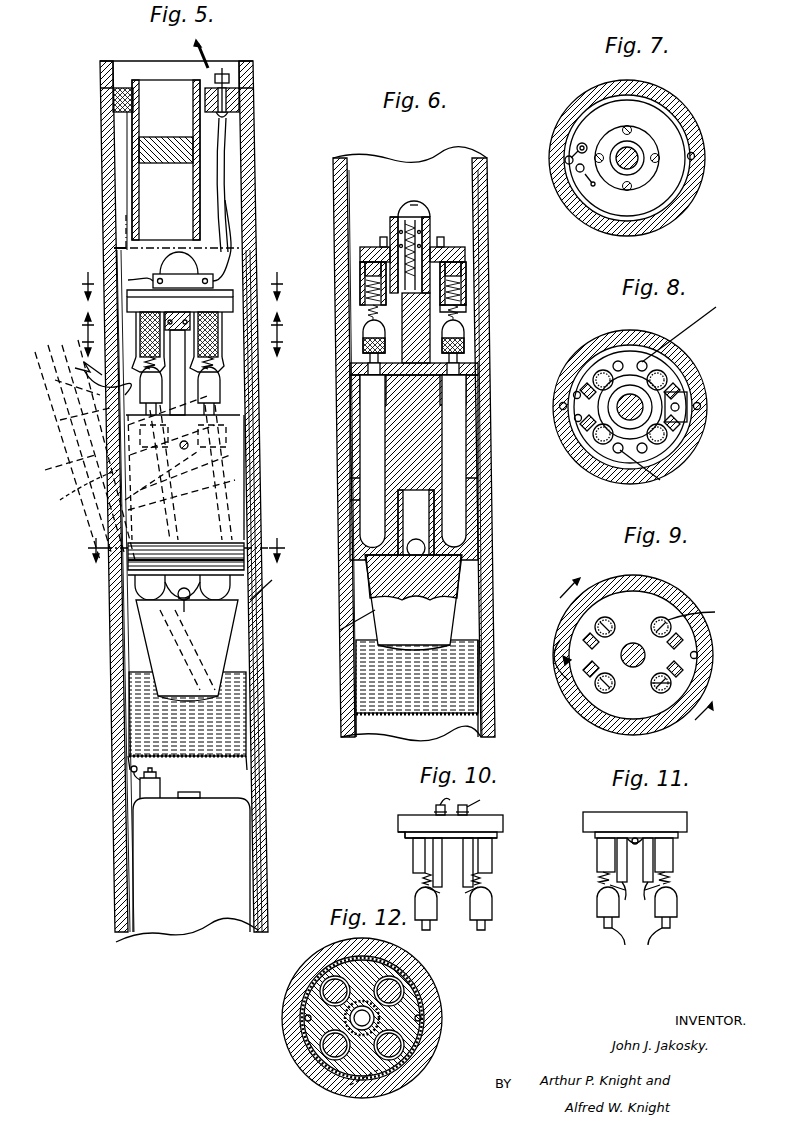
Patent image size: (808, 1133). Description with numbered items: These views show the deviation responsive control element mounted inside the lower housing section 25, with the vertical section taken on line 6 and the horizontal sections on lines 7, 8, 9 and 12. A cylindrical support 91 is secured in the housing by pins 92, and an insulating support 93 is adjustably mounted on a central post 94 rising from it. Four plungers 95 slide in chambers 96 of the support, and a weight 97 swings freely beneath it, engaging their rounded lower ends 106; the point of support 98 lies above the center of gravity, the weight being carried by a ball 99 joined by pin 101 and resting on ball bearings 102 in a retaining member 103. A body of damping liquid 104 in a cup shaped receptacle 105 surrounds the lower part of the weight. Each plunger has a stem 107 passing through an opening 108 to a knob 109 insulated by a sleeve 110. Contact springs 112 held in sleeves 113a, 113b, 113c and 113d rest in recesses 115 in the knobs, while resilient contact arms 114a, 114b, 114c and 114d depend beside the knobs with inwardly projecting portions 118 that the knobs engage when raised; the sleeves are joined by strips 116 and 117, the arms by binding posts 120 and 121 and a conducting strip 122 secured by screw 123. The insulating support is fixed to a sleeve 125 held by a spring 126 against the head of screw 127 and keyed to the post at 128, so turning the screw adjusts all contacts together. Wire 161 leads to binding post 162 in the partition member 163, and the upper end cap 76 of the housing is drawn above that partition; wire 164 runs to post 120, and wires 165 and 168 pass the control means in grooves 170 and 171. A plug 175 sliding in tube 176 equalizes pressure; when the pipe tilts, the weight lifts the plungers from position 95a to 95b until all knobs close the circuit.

In FIG. 9, the section line 6— 6 is at (633, 656).
In FIG. 5, the section line 7— 7 is at (181, 286).
In FIG. 5, the section line 8— 8 is at (179, 324).
In FIG. 5, the section line 9— 9 is at (180, 344).
In FIG. 5, the section line 12— 12 is at (184, 549).
In FIG. 5, the lower housing section 25 is at (254, 222).
In FIG. 5, the top cap 76 is at (253, 85).
In FIG. 5, the cylindrical support 91 is at (240, 456).
In FIG. 6, the cylindrical support 91 is at (420, 422).
In FIG. 12, the cylindrical support 91 is at (420, 1000).
In FIG. 5, the pins 92 is at (130, 530).
In FIG. 5, the insulating support 93 is at (233, 302).
In FIG. 6, the insulating support 93 is at (465, 252).
In FIG. 7, the insulating support 93 is at (675, 176).
In FIG. 8, the insulating support 93 is at (690, 435).
In FIG. 10, the insulating support 93 is at (398, 825).
In FIG. 11, the insulating support 93 is at (595, 818).
In FIG. 5, the central post 94 is at (190, 370).
In FIG. 6, the central post 94 is at (430, 330).
In FIG. 8, the central post 94 is at (648, 390).
In FIG. 9, the central post 94 is at (628, 645).
In FIG. 5, the plungers 95 is at (240, 584).
In FIG. 6, the plungers 95 is at (460, 466).
In FIG. 12, the plungers 95 is at (335, 1048).
In FIG. 5, the plunger position 95a is at (75, 494).
In FIG. 5, the raised plunger position 95b is at (232, 582).
In FIG. 6, the chambers 96 is at (468, 480).
In FIG. 12, the chambers 96 is at (320, 992).
In FIG. 5, the weight 97 is at (160, 640).
In FIG. 6, the weight 97 is at (455, 570).
In FIG. 12, the weight 97 is at (385, 1100).
In FIG. 5, the point of support 98 is at (184, 604).
In FIG. 6, the point of support 98 is at (430, 540).
In FIG. 6, the ball 99 is at (412, 590).
In FIG. 12, the ball 99 is at (356, 1018).
In FIG. 6, the pin 101 is at (337, 636).
In FIG. 6, the ball bearings 102 is at (416, 598).
In FIG. 12, the ball bearings 102 is at (366, 1028).
In FIG. 6, the retaining member 103 is at (400, 560).
In FIG. 5, the damping liquid 104 is at (140, 730).
In FIG. 6, the damping liquid 104 is at (470, 660).
In FIG. 5, the receptacle 105 is at (248, 716).
In FIG. 6, the receptacle 105 is at (482, 605).
In FIG. 12, the receptacle 105 is at (425, 985).
In FIG. 6, the rounded lower ends 106 is at (358, 545).
In FIG. 5, the stem 107 is at (225, 413).
In FIG. 6, the stem 107 is at (466, 388).
In FIG. 11, the stem 107 is at (637, 936).
In FIG. 6, the opening 108 is at (478, 366).
In FIG. 5, the knob 109 is at (220, 388).
In FIG. 6, the knob 109 is at (363, 345).
In FIG. 10, the knob 109 is at (492, 906).
In FIG. 11, the knob 109 is at (672, 905).
In FIG. 6, the insulating sleeve 110 is at (340, 330).
In FIG. 5, the contact springs 112 is at (208, 362).
In FIG. 6, the contact springs 112 is at (455, 310).
In FIG. 9, the contact springs 112 is at (690, 680).
In FIG. 11, the contact springs 112 is at (672, 880).
In FIG. 5, the sleeve 113a is at (136, 355).
In FIG. 8, the sleeve 113a is at (603, 375).
In FIG. 9, the sleeve 113a is at (608, 690).
In FIG. 10, the sleeve 113a is at (478, 880).
In FIG. 5, the sleeve 113b is at (225, 360).
In FIG. 8, the sleeve 113b is at (657, 375).
In FIG. 9, the sleeve 113b is at (663, 693).
In FIG. 11, the sleeve 113b is at (597, 855).
In FIG. 8, the sleeve 113c is at (665, 440).
In FIG. 9, the sleeve 113c is at (670, 625).
In FIG. 11, the sleeve 113c is at (665, 850).
In FIG. 8, the sleeve 113d is at (603, 440).
In FIG. 9, the sleeve 113d is at (605, 622).
In FIG. 10, the sleeve 113d is at (425, 880).
In FIG. 5, the resilient contact arm 114a is at (140, 330).
In FIG. 8, the resilient contact arm 114a is at (585, 385).
In FIG. 9, the resilient contact arm 114a is at (588, 672).
In FIG. 10, the resilient contact arm 114a is at (478, 855).
In FIG. 5, the resilient contact arm 114b is at (222, 340).
In FIG. 6, the resilient contact arm 114b is at (466, 285).
In FIG. 8, the resilient contact arm 114b is at (674, 390).
In FIG. 9, the resilient contact arm 114b is at (680, 672).
In FIG. 11, the resilient contact arm 114b is at (620, 858).
In FIG. 8, the resilient contact arm 114c is at (676, 426).
In FIG. 9, the resilient contact arm 114c is at (682, 642).
In FIG. 11, the resilient contact arm 114c is at (653, 860).
In FIG. 6, the resilient contact arm 114d is at (365, 290).
In FIG. 8, the resilient contact arm 114d is at (588, 428).
In FIG. 9, the resilient contact arm 114d is at (590, 638).
In FIG. 10, the resilient contact arm 114d is at (425, 855).
In FIG. 6, the recess 115 is at (466, 310).
In FIG. 5, the arc shaped strip 116 is at (128, 302).
In FIG. 8, the arc shaped strip 116 is at (645, 368).
In FIG. 10, the arc shaped strip 116 is at (503, 832).
In FIG. 8, the strip 117 is at (642, 452).
In FIG. 10, the strip 117 is at (398, 838).
In FIG. 5, the projecting portion 118 is at (96, 390).
In FIG. 9, the projecting portion 118 is at (727, 611).
In FIG. 11, the projecting portion 118 is at (636, 898).
In FIG. 5, the binding post 120 is at (114, 250).
In FIG. 7, the binding post 120 is at (575, 172).
In FIG. 8, the binding post 120 is at (574, 395).
In FIG. 10, the binding post 120 is at (462, 805).
In FIG. 7, the binding post 121 is at (578, 146).
In FIG. 8, the binding post 121 is at (575, 420).
In FIG. 10, the binding post 121 is at (436, 808).
In FIG. 8, the conducting strip 122 is at (687, 410).
In FIG. 11, the conducting strip 122 is at (640, 838).
In FIG. 8, the screw 123 is at (679, 405).
In FIG. 5, the sleeve 125 is at (213, 276).
In FIG. 6, the sleeve 125 is at (430, 228).
In FIG. 7, the sleeve 125 is at (635, 168).
In FIG. 8, the sleeve 125 is at (645, 405).
In FIG. 6, the spring 126 is at (390, 222).
In FIG. 5, the screw 127 is at (195, 258).
In FIG. 6, the screw 127 is at (428, 208).
In FIG. 7, the screw 127 is at (633, 150).
In FIG. 6, the key 128 is at (395, 318).
In FIG. 5, the wire 161 is at (210, 55).
In FIG. 5, the binding post 162 is at (240, 108).
In FIG. 5, the insulating partition member 163 is at (226, 118).
In FIG. 5, the wire 164 is at (224, 185).
In FIG. 7, the wire 164 is at (593, 186).
In FIG. 10, the wire 164 is at (480, 800).
In FIG. 5, the wire 165 is at (140, 700).
In FIG. 7, the wire 165 is at (565, 158).
In FIG. 8, the wire 165 is at (560, 406).
In FIG. 9, the wire 165 is at (560, 682).
In FIG. 10, the wire 165 is at (440, 800).
In FIG. 5, the wire 168 is at (186, 447).
In FIG. 7, the wire 168 is at (695, 156).
In FIG. 8, the wire 168 is at (700, 404).
In FIG. 9, the wire 168 is at (690, 655).
In FIG. 5, the vertical groove 170 is at (100, 445).
In FIG. 5, the vertical groove 171 is at (258, 440).
In FIG. 5, the plug 175 is at (139, 163).
In FIG. 5, the tube 176 is at (113, 130).